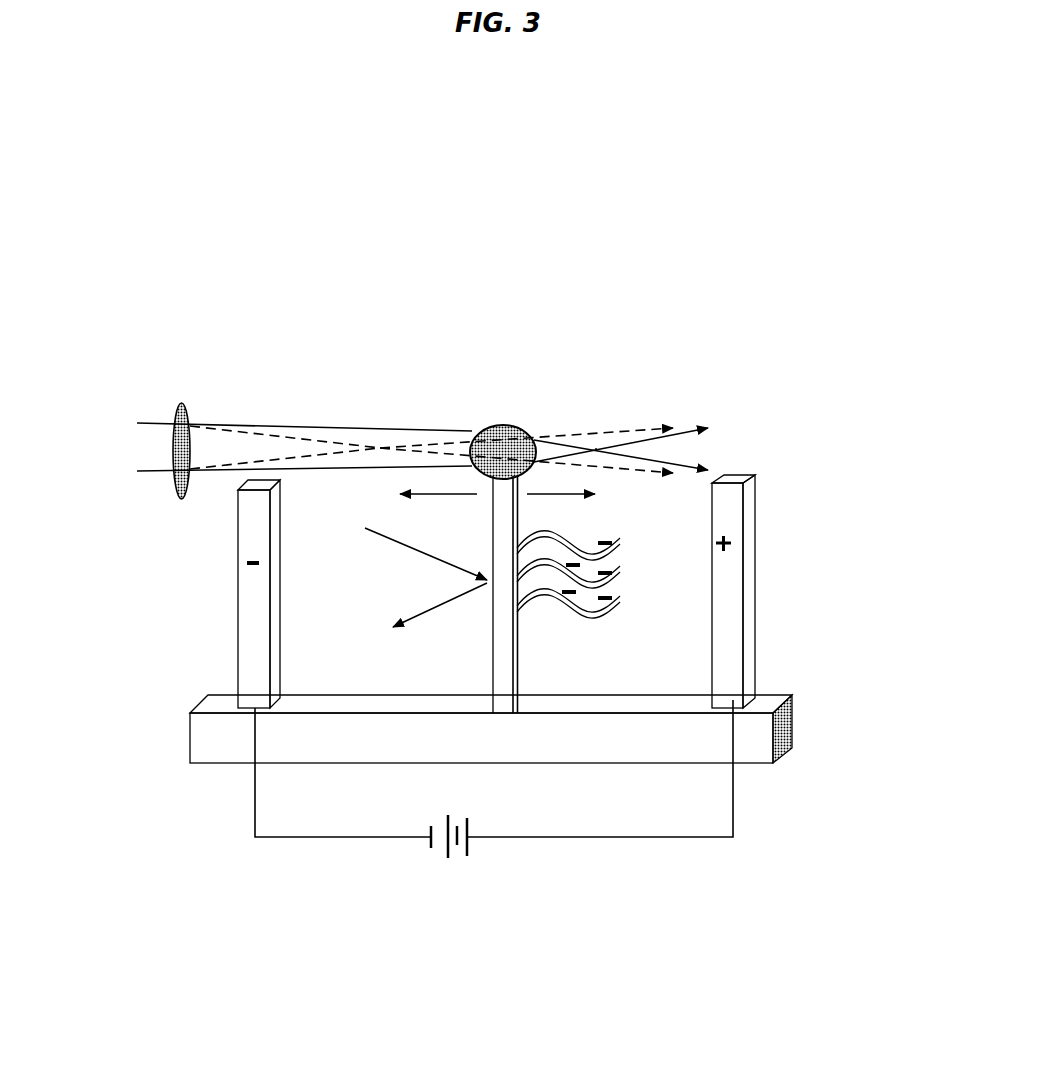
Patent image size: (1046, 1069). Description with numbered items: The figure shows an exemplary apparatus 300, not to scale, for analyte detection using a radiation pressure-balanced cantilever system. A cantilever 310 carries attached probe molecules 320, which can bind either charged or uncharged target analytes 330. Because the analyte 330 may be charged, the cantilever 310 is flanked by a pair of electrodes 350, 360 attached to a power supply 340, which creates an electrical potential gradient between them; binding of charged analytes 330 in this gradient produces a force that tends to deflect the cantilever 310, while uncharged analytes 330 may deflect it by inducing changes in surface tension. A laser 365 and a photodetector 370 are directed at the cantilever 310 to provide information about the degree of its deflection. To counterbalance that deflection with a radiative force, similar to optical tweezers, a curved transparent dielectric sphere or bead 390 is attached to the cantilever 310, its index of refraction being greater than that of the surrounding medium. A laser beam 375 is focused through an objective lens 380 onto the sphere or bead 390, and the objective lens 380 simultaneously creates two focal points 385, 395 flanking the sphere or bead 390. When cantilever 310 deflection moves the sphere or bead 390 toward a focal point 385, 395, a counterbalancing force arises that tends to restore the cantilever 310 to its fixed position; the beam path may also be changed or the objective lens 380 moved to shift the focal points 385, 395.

The apparatus 300 is at (542, 979).
The cantilever 310 is at (505, 583).
The probe molecules 320 is at (593, 625).
The analyte 330 is at (617, 595).
The power supply 340 is at (437, 858).
The electrode 350 is at (252, 623).
The electrode 360 is at (730, 612).
The laser 365 is at (393, 546).
The photodetector 370 is at (397, 623).
The laser beam 375 is at (399, 447).
The objective lens 380 is at (186, 405).
The focal point 385 is at (385, 445).
The transparent dielectric sphere or bead 390 is at (527, 425).
The focal point 395 is at (597, 443).